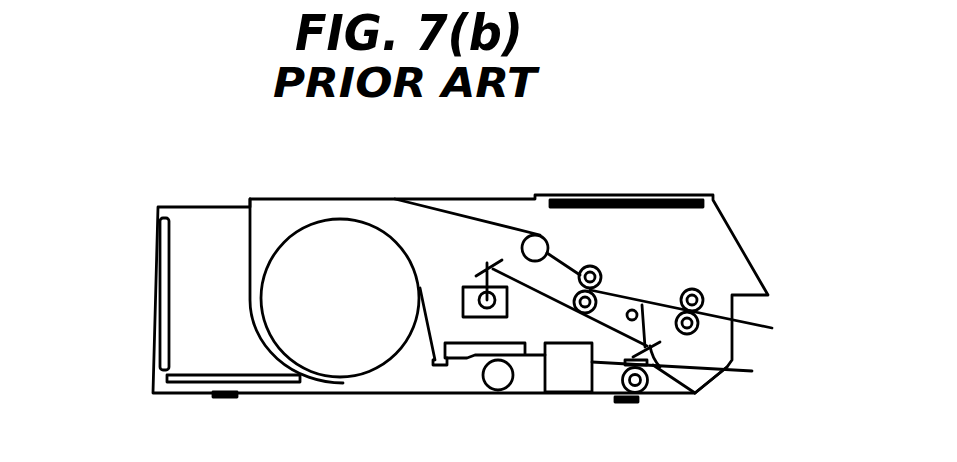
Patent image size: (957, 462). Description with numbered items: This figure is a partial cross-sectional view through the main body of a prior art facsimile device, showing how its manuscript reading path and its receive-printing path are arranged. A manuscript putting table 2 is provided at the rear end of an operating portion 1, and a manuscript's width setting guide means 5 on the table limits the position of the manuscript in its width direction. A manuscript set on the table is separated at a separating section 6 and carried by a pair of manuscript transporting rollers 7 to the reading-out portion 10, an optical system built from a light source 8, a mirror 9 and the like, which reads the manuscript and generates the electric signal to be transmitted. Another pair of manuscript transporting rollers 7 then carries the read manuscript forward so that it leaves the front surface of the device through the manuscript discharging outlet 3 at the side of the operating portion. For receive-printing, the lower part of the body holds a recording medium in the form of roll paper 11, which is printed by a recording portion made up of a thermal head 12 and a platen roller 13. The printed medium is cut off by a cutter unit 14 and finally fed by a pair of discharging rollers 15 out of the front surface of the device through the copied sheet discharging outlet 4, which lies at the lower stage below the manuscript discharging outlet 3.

The operating portion 1 is at (638, 195).
The manuscript putting table 2 is at (335, 199).
The manuscript discharging outlet 3 is at (738, 305).
The copied sheet discharging outlet 4 is at (712, 387).
The manuscript's width setting guide means 5 is at (498, 222).
The separating section 6 is at (533, 243).
The manuscript transporting rollers 7 is at (598, 268).
The light source 8 is at (632, 309).
The mirror 9 is at (694, 393).
The reading-out portion 10 is at (507, 300).
The roll paper 11 is at (296, 267).
The thermal head 12 is at (455, 358).
The platen roller 13 is at (497, 382).
The cutter unit 14 is at (568, 380).
The discharging rollers 15 is at (645, 393).